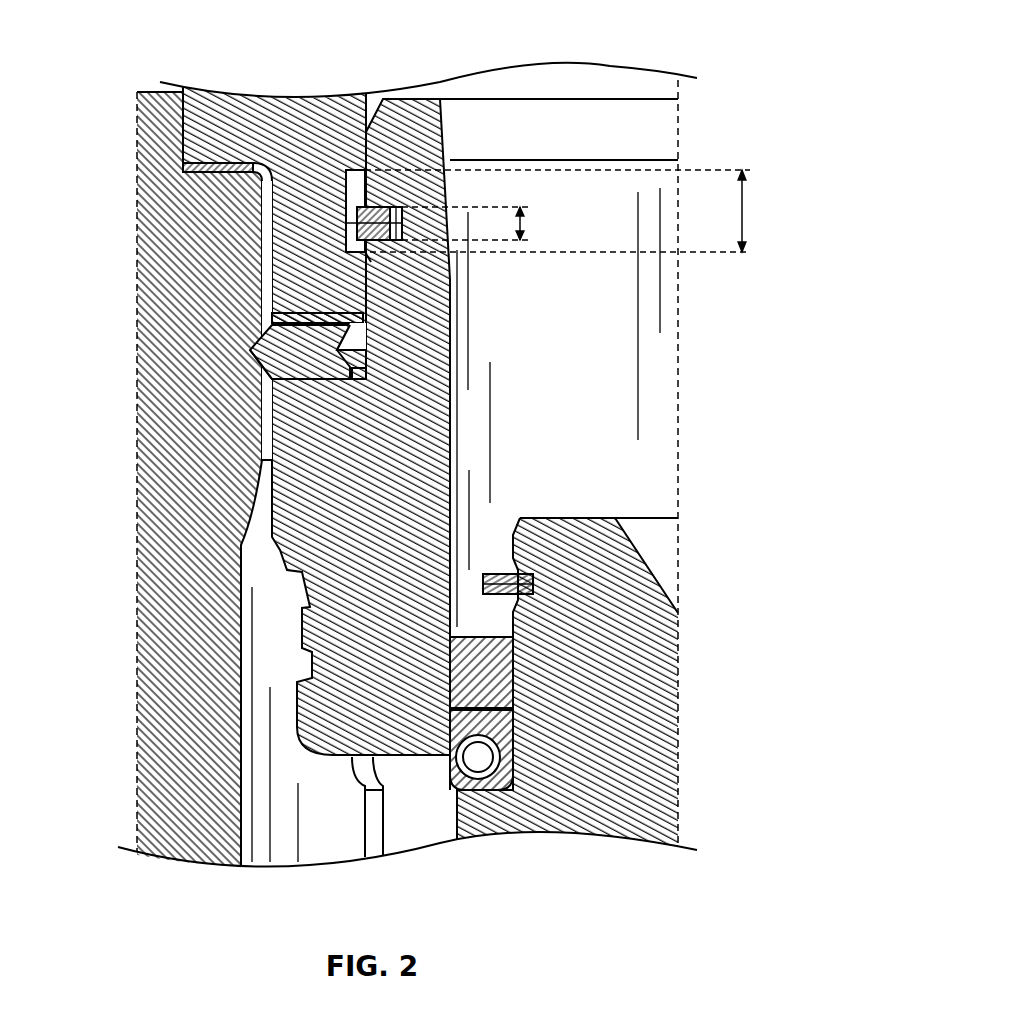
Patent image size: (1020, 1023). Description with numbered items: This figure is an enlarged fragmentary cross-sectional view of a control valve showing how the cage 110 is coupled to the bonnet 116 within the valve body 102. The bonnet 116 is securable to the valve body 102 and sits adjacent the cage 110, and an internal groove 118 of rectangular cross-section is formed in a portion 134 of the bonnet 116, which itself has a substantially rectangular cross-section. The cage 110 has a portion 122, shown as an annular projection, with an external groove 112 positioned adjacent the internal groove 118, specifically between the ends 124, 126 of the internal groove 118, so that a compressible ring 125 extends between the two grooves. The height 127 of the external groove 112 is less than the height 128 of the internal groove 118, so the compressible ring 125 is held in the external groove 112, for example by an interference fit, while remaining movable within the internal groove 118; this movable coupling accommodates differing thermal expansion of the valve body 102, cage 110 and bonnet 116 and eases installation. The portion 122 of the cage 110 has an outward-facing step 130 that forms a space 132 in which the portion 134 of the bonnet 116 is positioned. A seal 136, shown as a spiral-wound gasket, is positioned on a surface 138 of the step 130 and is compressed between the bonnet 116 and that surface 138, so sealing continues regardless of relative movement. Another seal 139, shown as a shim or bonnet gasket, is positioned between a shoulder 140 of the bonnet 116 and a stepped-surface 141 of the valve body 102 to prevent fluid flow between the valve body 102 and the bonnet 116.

The valve body 102 is at (165, 318).
The cage 110 is at (272, 553).
The external groove 112 is at (346, 222).
The bonnet 116 is at (277, 113).
The internal groove 118 is at (346, 227).
The portion of the cage 122 is at (415, 345).
The end of the internal groove 124 is at (372, 258).
The compressible ring 125 is at (362, 206).
The end of the internal groove 126 is at (362, 190).
The height of the external groove 127 is at (520, 224).
The height of the internal groove 128 is at (742, 213).
The outward-facing step 130 is at (366, 375).
The space 132 is at (268, 268).
The portion of the bonnet 134 is at (270, 313).
The seal 136 is at (273, 362).
The surface of the step 138 is at (340, 380).
The seal 139 is at (188, 165).
The shoulder of the bonnet 140 is at (202, 98).
The stepped-surface of the valve body 141 is at (160, 83).